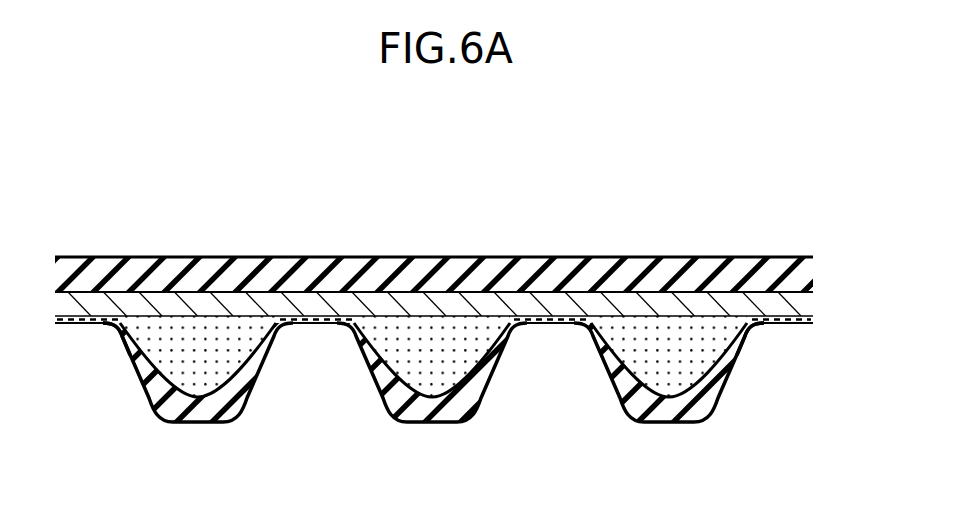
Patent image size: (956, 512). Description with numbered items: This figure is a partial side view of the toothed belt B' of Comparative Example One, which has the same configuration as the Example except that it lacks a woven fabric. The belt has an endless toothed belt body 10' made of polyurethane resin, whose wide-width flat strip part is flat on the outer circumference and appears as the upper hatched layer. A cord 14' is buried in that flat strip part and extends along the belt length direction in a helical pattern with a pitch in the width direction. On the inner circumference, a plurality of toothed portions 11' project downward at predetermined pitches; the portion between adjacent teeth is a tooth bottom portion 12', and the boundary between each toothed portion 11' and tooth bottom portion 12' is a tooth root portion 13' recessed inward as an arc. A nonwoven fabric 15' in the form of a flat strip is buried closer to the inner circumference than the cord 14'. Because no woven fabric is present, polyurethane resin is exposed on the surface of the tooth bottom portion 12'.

The toothed belt B' is at (451, 174).
The toothed belt body 10' is at (478, 256).
The cord 14' is at (446, 260).
The toothed portion 11' is at (433, 406).
The tooth bottom portion 12' is at (434, 359).
The tooth root portion 13' is at (435, 360).
The nonwoven fabric 15' is at (433, 395).